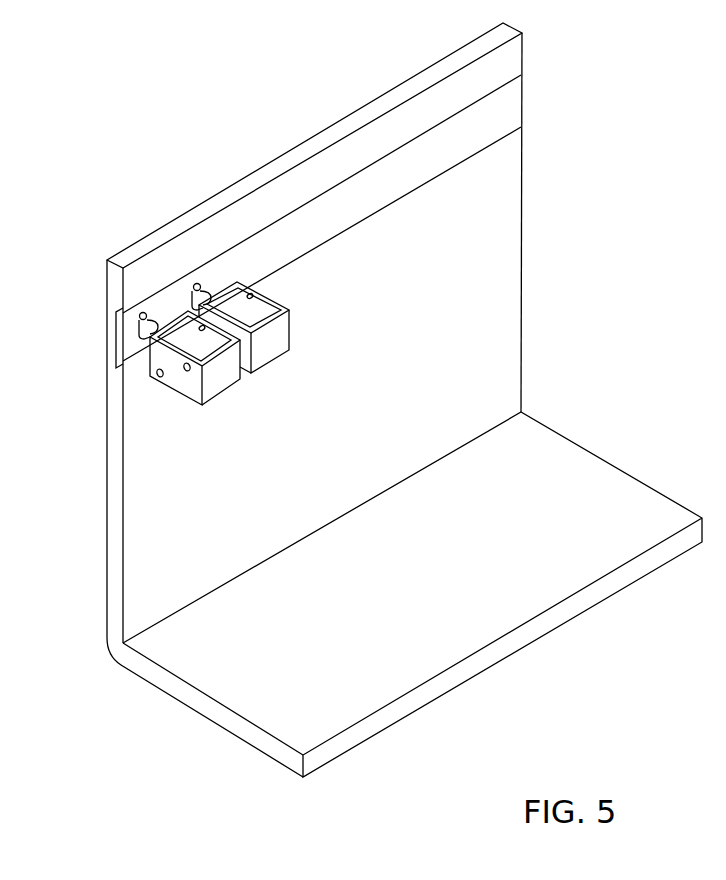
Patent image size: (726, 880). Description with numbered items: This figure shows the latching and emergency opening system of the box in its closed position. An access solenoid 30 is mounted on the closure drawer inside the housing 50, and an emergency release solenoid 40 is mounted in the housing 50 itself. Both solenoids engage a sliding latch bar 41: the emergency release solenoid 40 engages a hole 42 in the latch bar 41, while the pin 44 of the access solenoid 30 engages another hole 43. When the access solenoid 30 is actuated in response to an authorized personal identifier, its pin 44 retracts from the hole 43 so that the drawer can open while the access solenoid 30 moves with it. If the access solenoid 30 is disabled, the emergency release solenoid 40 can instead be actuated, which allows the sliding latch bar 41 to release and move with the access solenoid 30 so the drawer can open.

The access solenoid 30 is at (283, 342).
The emergency release solenoid 40 is at (178, 383).
The sliding latch bar 41 is at (266, 240).
The hole 42 is at (143, 312).
The hole 43 is at (199, 284).
The pin 44 is at (194, 287).
The housing 50 is at (238, 688).